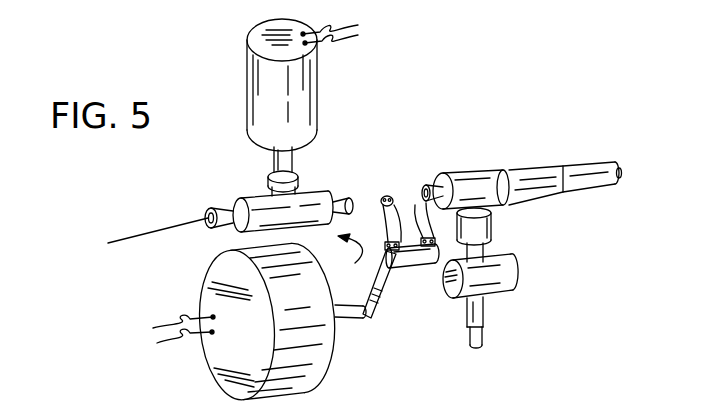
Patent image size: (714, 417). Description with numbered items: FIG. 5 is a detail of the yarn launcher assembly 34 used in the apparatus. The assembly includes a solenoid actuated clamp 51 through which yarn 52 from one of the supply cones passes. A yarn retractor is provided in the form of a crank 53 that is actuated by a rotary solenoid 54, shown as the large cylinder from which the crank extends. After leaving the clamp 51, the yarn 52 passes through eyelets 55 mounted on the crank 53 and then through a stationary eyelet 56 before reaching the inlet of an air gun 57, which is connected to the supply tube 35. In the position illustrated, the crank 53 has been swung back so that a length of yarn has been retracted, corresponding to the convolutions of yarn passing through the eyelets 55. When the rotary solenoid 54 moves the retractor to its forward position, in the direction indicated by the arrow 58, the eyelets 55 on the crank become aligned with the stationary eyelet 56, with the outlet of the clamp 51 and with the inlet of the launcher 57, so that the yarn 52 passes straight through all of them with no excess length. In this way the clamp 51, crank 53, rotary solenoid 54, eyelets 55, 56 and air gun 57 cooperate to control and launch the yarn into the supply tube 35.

The yarn launcher assembly 34 is at (407, 98).
The supply tube 35 is at (593, 172).
The solenoid actuated clamp 51 is at (308, 193).
The yarn 52 is at (175, 227).
The crank 53 is at (382, 296).
The rotary solenoid 54 is at (318, 356).
The eyelets 55 is at (397, 266).
The stationary eyelet 56 is at (387, 196).
The air gun 57 is at (487, 186).
The arrow 58 is at (346, 255).